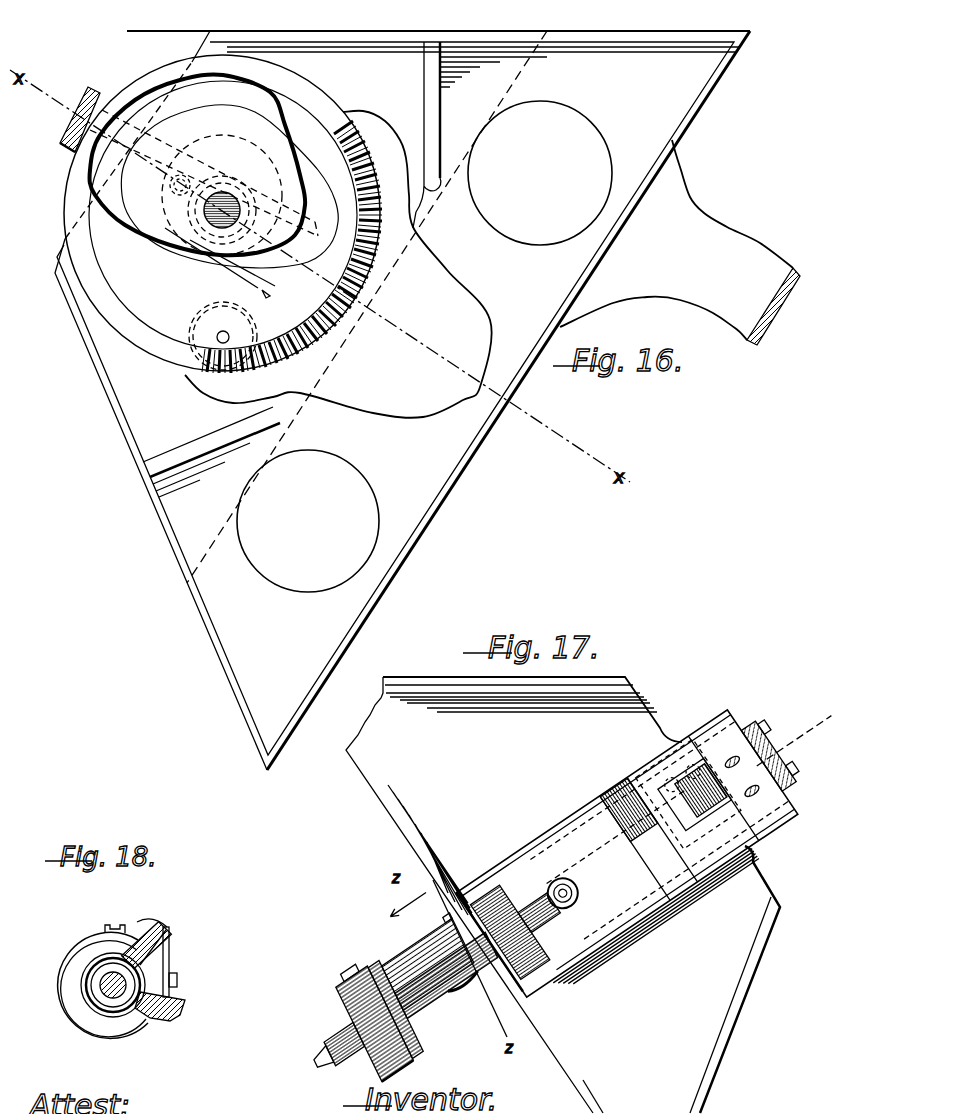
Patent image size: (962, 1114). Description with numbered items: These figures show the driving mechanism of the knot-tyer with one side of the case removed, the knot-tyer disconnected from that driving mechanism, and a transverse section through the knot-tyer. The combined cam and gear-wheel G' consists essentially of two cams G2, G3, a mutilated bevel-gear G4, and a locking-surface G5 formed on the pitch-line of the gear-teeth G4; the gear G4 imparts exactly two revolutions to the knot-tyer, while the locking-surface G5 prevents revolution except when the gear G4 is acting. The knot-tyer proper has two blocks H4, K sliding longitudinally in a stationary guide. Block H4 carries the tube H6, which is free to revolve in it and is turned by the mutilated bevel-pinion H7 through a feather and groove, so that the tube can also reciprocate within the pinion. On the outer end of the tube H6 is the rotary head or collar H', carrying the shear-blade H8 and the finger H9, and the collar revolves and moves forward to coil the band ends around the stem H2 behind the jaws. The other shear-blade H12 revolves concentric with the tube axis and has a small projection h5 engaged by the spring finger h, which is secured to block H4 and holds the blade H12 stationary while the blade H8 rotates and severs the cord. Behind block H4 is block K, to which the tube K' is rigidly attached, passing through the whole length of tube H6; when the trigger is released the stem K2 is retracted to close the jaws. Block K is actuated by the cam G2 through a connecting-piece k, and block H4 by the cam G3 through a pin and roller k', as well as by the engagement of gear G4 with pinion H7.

In FIG. 16, the cam and gear-wheel G' is at (235, 227).
In FIG. 16, the cam G2 is at (295, 321).
In FIG. 16, the cam G3 is at (198, 164).
In FIG. 16, the mutilated bevel-gear G4 is at (338, 264).
In FIG. 16, the locking-surface G5 is at (114, 264).
In FIG. 17, the collar or rotary head H' is at (383, 1025).
In FIG. 17, the stem H2 is at (337, 1042).
In FIG. 17, the block H4 is at (597, 869).
In FIG. 17, the tube H6 is at (447, 977).
In FIG. 17, the bevel-pinion H7 is at (524, 923).
In FIG. 17, the shear-blade H8 is at (362, 966).
In FIG. 18, the shear-blade H8 is at (170, 1002).
In FIG. 18, the finger H9 is at (171, 952).
In FIG. 17, the shear-blade H12 is at (431, 986).
In FIG. 18, the shear-blade H12 is at (147, 934).
In FIG. 17, the finger h is at (411, 951).
In FIG. 18, the projection h5 is at (178, 978).
In FIG. 17, the pin and roller k' is at (563, 887).
In FIG. 17, the tube K' is at (629, 822).
In FIG. 17, the stem K2 is at (688, 794).
In FIG. 17, the block K is at (695, 794).
In FIG. 17, the connecting-piece k is at (793, 739).